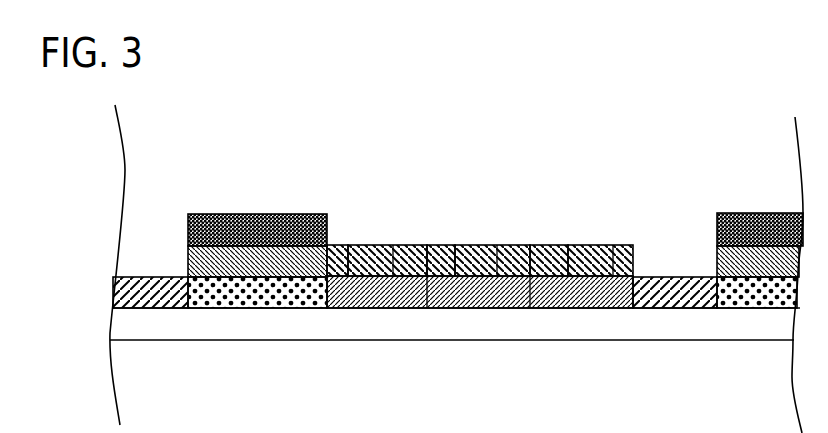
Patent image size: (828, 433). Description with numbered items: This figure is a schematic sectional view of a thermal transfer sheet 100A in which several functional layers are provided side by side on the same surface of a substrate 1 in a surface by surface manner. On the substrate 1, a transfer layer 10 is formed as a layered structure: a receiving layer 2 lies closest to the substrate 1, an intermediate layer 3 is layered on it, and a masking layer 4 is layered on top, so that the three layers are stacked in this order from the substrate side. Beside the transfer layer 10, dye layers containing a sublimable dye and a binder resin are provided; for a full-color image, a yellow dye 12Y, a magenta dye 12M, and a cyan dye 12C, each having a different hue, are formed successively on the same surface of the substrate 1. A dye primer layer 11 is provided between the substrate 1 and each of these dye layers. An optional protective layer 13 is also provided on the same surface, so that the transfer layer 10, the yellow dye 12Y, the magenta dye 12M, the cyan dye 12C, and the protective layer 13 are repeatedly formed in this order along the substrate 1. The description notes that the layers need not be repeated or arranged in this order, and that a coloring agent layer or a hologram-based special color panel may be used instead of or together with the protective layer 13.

The thermal transfer sheet 100A is at (740, 36).
The substrate 1 is at (377, 316).
The receiving layer 2 is at (215, 293).
The intermediate layer 3 is at (248, 262).
The masking layer 4 is at (287, 215).
The transfer layer 10 is at (188, 148).
The dye primer layer 11 is at (352, 245).
The yellow dye 12Y is at (390, 245).
The magenta dye 12M is at (500, 245).
The cyan dye 12C is at (614, 245).
The protective layer 13 is at (148, 277).